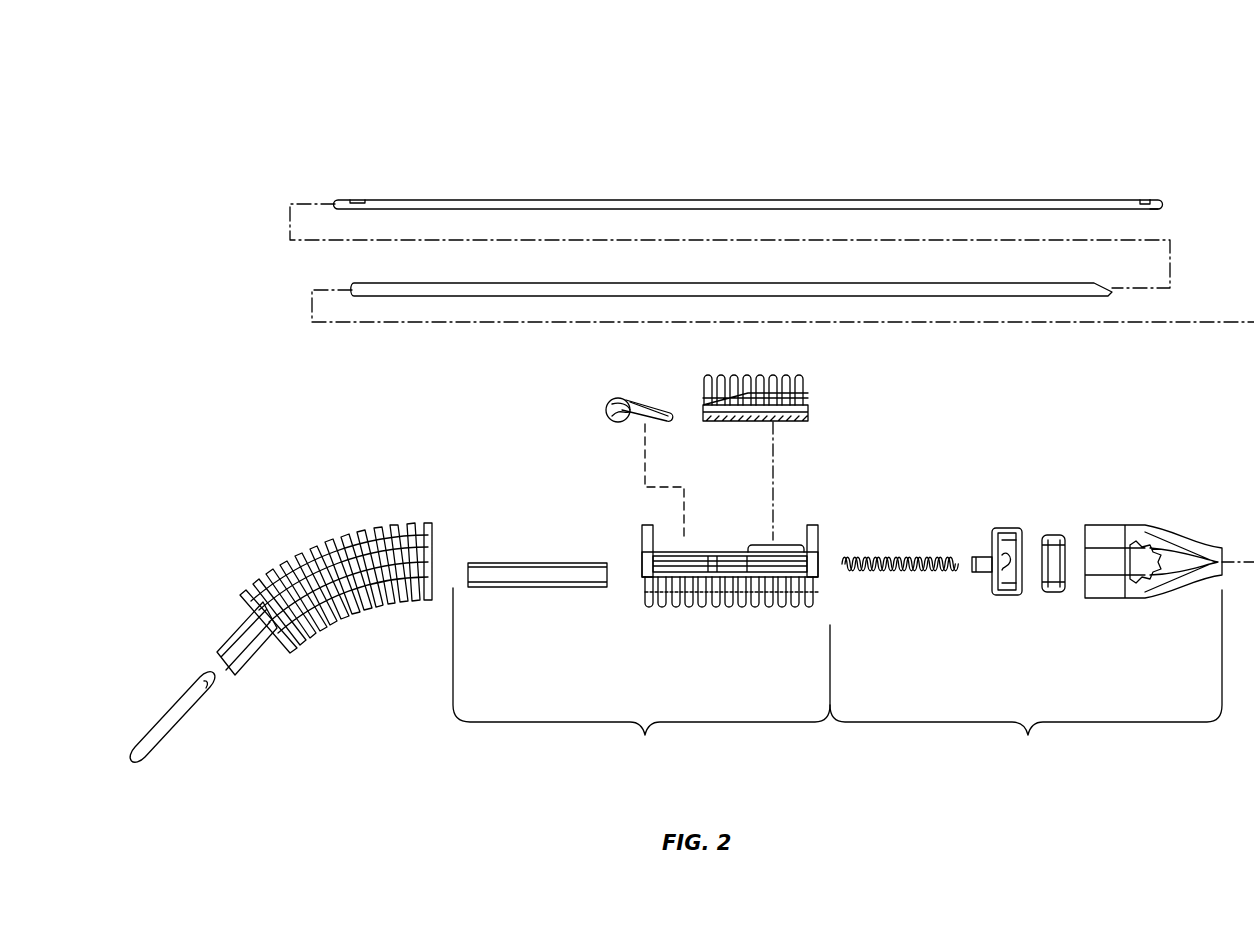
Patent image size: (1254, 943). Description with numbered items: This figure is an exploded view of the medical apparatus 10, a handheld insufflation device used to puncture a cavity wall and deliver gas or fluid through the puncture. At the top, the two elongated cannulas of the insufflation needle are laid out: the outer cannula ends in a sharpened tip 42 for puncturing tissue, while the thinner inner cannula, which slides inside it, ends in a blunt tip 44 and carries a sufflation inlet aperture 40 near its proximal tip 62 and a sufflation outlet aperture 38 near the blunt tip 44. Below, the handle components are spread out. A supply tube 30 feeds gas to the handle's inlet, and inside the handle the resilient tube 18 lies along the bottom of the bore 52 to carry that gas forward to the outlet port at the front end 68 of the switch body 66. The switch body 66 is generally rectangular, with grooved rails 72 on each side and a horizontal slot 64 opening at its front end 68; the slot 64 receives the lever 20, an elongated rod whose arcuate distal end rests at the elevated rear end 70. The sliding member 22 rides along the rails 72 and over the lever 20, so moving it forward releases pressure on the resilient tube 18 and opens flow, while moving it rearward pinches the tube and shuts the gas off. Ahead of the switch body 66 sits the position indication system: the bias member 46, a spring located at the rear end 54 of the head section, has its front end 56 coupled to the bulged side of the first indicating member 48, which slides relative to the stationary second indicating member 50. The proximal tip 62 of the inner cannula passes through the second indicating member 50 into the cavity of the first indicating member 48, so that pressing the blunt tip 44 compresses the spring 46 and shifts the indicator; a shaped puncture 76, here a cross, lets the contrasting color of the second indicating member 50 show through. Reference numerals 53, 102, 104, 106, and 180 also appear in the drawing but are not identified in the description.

The medical apparatus 10 is at (1166, 116).
The resilient tube 18 is at (524, 594).
The lever 20 is at (598, 396).
The sliding member 22 is at (826, 390).
The supply tube 30 is at (170, 733).
The sufflation outlet aperture 38 is at (1145, 199).
The sufflation inlet aperture 40 is at (368, 199).
The sharpened tip 42 is at (1104, 286).
The blunt tip 44 is at (1162, 206).
The bias member 46 is at (904, 577).
The first indicating member 48 is at (1004, 597).
The second indicating member 50 is at (1055, 534).
The bore 52 is at (748, 565).
The stem 53 is at (984, 557).
The rear end of head section 54 is at (846, 548).
The front end of bias member 56 is at (950, 548).
The proximal tip 62 is at (352, 199).
The slot 64 is at (783, 545).
The switch body 66 is at (722, 616).
The front end of switch body 68 is at (821, 600).
The rear end of switch body 70 is at (643, 583).
The grooved rails 72 is at (250, 668).
The shaped puncture 76 is at (1010, 530).
The nozzle assembly 102 is at (1042, 623).
The handle assembly 104 is at (666, 627).
The flexible hose 106 is at (276, 538).
The rod assembly 180 is at (256, 205).